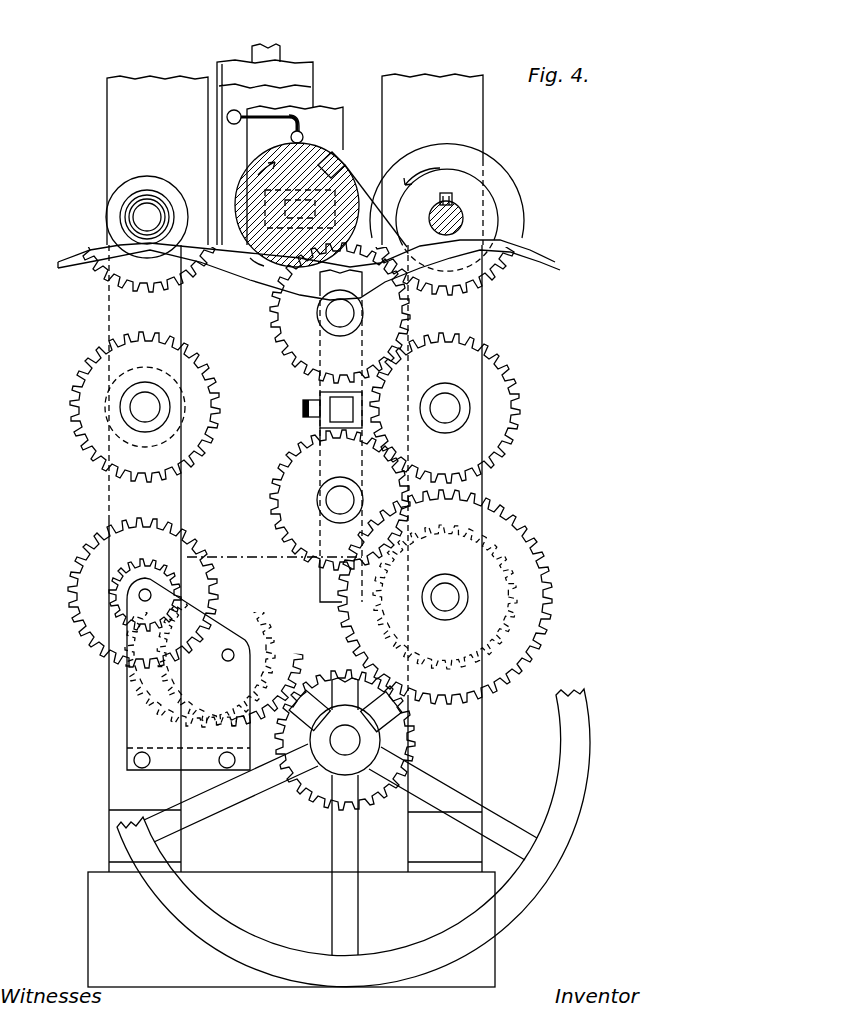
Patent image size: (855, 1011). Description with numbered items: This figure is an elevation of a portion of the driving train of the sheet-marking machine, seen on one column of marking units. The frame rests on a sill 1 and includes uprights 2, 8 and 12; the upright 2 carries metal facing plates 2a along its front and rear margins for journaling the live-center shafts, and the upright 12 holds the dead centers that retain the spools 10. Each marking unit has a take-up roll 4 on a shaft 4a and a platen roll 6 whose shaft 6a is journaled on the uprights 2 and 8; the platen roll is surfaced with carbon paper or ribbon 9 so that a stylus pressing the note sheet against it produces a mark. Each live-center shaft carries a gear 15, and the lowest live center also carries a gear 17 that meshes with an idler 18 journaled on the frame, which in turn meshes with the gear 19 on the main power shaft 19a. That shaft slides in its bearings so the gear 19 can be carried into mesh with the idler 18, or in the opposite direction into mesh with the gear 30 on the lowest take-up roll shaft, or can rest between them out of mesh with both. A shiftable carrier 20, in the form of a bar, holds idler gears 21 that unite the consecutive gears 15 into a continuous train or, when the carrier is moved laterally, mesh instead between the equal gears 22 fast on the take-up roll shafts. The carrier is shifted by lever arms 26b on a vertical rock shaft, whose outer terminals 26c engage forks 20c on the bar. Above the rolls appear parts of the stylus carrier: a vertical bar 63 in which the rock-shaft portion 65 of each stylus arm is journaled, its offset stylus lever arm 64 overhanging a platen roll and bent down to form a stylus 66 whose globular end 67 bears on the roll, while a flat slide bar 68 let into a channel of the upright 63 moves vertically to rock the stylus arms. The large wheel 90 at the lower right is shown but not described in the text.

The sill 1 is at (100, 895).
The upright 2 is at (254, 562).
The facing plates 2a is at (115, 316).
The take-up roll 4 is at (480, 213).
The take-up roll shaft 4a is at (455, 212).
The platen roll 6 is at (163, 238).
The platen roll shaft 6a is at (283, 215).
The upright 8 is at (332, 107).
The carbon paper or ribbon 9 is at (257, 257).
The spool 10 is at (147, 205).
The upright 12 is at (158, 84).
The gear 15 is at (90, 262).
The gear 17 is at (123, 598).
The idler 18 is at (250, 602).
The gear 19 is at (400, 746).
The main power shaft 19a is at (340, 745).
The shiftable carrier 20 is at (320, 283).
The forks 20c is at (320, 428).
The idler gears 21 is at (287, 340).
The gears 22 is at (500, 266).
The lever arms 26b is at (303, 410).
The outer terminals 26c is at (348, 412).
The gear 30 is at (525, 635).
The vertical bar 63 is at (300, 72).
The stylus lever arm 64 is at (277, 117).
The rock-shaft portion 65 is at (227, 117).
The stylus 66 is at (302, 127).
The globular end 67 is at (303, 136).
The slide bar 68 is at (272, 45).
The balance wheel 90 is at (588, 742).